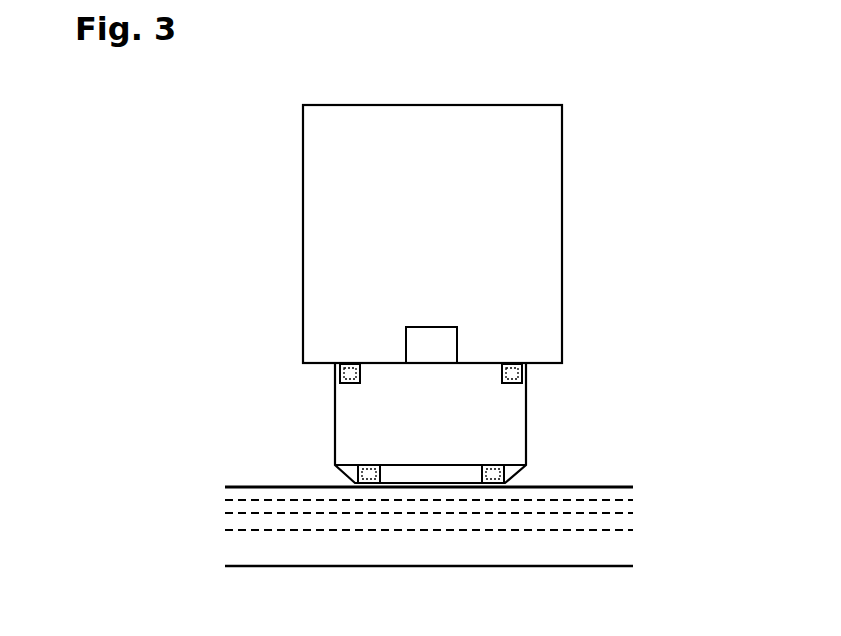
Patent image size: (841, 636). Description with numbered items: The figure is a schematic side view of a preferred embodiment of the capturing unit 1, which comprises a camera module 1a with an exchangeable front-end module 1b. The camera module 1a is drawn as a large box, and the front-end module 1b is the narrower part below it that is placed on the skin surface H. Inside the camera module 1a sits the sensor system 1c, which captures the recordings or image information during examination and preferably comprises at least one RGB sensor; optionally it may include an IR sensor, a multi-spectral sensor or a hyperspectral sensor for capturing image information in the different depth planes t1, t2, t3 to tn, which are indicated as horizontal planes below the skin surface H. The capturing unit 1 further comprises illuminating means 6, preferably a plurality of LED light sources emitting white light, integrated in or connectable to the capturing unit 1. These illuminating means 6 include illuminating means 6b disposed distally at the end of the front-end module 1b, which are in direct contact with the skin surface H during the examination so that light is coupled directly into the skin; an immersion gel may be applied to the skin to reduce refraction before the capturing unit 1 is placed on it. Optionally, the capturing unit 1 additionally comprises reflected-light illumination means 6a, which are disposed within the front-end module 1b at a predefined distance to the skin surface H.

The capturing unit 1 is at (570, 100).
The camera module 1a is at (446, 248).
The front-end module 1b is at (526, 415).
The sensor system 1c is at (445, 338).
The illuminating means 6 is at (350, 462).
The reflected-light illumination means 6a is at (345, 383).
The illuminating means 6b is at (363, 464).
The skin surface H is at (620, 487).
The depth plane t1 is at (227, 500).
The depth plane t2 is at (227, 513).
The depth plane t3 is at (227, 530).
The depth plane tn is at (441, 567).